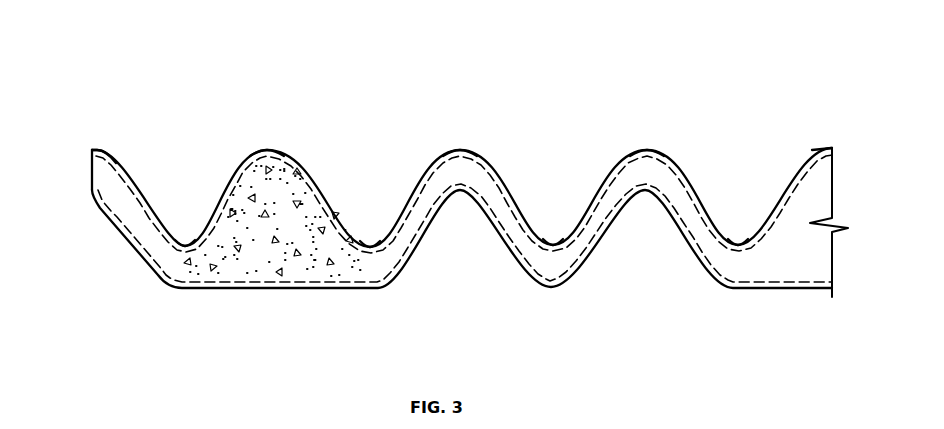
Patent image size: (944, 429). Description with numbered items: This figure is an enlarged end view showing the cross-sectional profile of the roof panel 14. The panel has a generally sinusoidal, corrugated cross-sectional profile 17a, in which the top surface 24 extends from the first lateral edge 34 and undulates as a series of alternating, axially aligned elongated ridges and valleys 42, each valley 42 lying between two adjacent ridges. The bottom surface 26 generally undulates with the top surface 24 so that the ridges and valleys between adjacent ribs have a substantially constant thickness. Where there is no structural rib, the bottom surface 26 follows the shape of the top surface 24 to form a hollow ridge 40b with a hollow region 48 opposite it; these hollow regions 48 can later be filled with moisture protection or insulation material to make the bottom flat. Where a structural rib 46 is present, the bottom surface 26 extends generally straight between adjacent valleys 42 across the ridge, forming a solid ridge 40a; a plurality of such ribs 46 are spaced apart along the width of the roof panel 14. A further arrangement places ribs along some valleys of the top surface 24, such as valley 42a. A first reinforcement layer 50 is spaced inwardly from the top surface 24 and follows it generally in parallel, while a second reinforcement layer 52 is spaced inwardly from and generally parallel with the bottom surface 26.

The roof panel 14 is at (593, 77).
The corrugated cross-sectional profile 17a is at (152, 281).
The top surface 24 is at (325, 182).
The bottom surface 26 is at (347, 289).
The first lateral edge 34 is at (92, 169).
The solid ridge 40a is at (263, 148).
The hollow ridge 40b is at (102, 148).
The valley 42 is at (185, 243).
The valley 42a is at (553, 243).
The structural rib 46 is at (260, 262).
The hollow region 48 is at (105, 254).
The first reinforcement layer 50 is at (446, 150).
The second reinforcement layer 52 is at (531, 281).